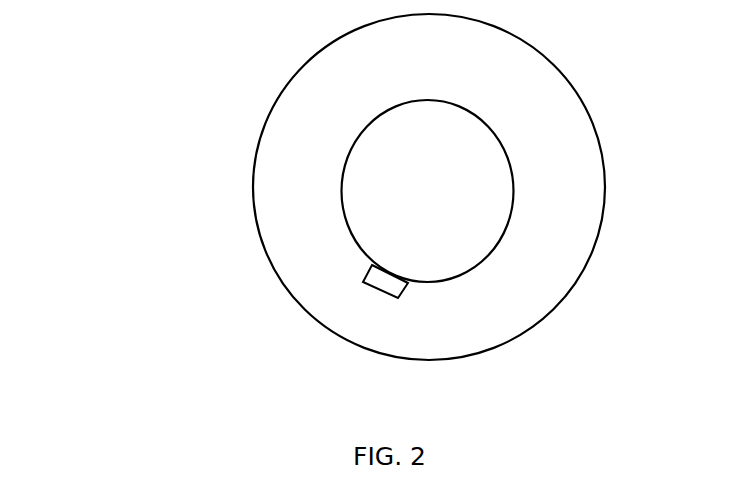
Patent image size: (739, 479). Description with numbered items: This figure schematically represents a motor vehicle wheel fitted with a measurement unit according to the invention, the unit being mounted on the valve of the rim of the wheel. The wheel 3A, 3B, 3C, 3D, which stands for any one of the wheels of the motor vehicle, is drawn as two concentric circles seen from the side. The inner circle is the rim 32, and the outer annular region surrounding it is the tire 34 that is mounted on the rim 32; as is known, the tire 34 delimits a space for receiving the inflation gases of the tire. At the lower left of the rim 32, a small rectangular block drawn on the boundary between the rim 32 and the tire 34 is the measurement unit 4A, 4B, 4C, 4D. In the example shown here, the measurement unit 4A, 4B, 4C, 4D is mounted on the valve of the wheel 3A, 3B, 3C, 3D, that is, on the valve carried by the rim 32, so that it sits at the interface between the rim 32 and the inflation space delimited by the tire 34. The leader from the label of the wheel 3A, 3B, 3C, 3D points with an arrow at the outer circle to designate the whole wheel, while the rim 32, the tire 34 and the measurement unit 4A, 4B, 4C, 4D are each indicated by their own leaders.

The wheel 3A is at (321, 187).
The wheel 3B is at (321, 187).
The wheel 3C is at (321, 187).
The wheel 3D is at (258, 230).
The measurement unit 4A is at (325, 329).
The measurement unit 4B is at (325, 329).
The measurement unit 4C is at (325, 329).
The measurement unit 4D is at (383, 293).
The rim 32 is at (513, 174).
The tire 34 is at (321, 187).